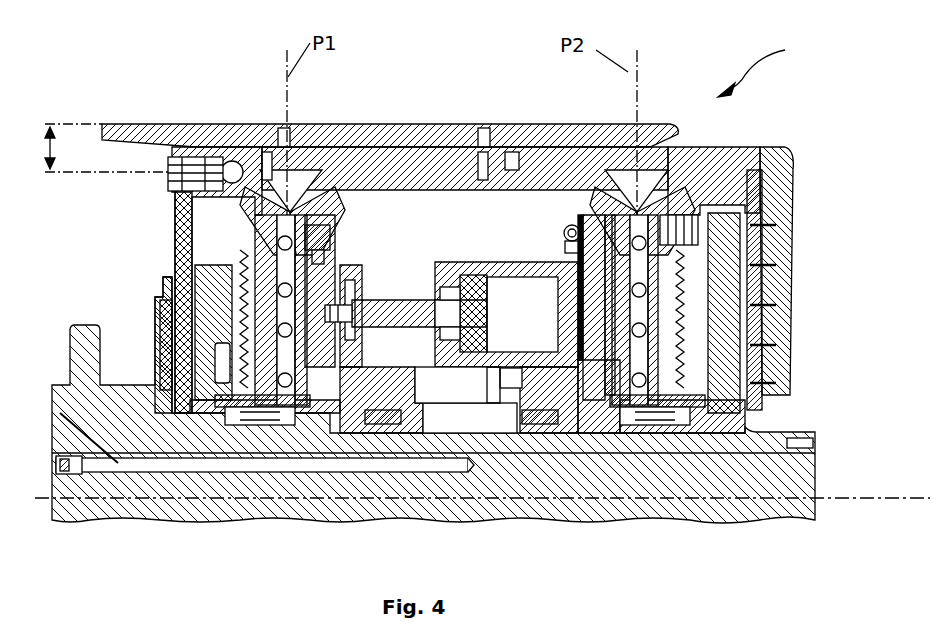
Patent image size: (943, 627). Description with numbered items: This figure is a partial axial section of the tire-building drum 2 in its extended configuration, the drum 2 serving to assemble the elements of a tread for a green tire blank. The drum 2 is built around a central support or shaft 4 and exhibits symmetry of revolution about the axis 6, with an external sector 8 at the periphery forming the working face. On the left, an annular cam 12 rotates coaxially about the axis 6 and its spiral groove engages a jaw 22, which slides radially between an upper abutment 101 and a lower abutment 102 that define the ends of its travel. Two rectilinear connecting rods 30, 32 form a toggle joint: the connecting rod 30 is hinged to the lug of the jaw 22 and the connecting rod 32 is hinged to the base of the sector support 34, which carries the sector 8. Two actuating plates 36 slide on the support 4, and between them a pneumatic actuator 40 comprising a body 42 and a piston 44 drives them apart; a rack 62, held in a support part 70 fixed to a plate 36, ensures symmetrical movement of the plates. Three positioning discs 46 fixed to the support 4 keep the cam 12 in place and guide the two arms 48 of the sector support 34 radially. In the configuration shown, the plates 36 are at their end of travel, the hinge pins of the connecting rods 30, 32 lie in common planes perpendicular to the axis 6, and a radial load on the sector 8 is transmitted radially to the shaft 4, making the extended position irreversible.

The drum 2 is at (761, 66).
The central support or shaft 4 is at (207, 510).
The axis 6 is at (533, 497).
The external sector 8 is at (480, 130).
The cam 12 is at (227, 307).
The jaw 22 is at (253, 398).
The connecting rod 30 is at (318, 345).
The connecting rod 32 is at (663, 232).
The sector support 34 is at (437, 167).
The actuating plate 36 is at (325, 245).
The actuator 40 is at (580, 350).
The body 42 is at (500, 368).
The piston 44 is at (407, 315).
The positioning disc 46 is at (193, 410).
The arm 48 is at (175, 200).
The rack 62 is at (447, 417).
The support part 70 is at (518, 395).
The upper abutment 101 is at (262, 215).
The lower abutment 102 is at (285, 330).